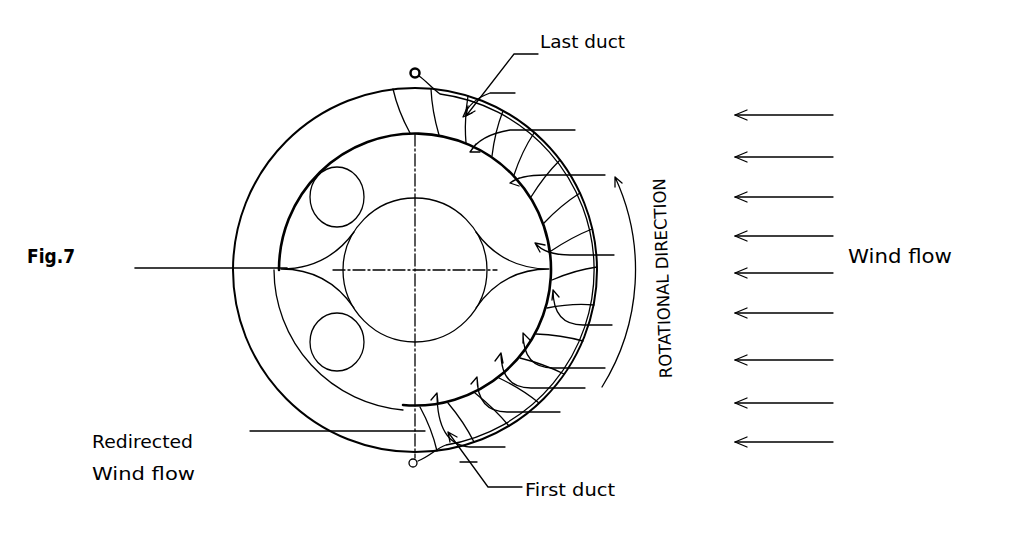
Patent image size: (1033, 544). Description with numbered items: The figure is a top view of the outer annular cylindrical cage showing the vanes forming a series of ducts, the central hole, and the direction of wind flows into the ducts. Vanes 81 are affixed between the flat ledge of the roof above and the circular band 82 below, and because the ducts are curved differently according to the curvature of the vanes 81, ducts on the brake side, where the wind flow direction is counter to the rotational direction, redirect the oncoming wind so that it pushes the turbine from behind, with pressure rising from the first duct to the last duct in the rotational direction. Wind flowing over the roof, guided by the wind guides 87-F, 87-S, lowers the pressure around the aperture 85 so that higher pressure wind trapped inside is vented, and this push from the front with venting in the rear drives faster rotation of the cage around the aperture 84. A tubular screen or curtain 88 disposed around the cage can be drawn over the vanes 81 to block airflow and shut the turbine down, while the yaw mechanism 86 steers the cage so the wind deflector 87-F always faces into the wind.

The vanes 81 is at (533, 160).
The circular band 82 is at (365, 108).
The aperture 84 is at (466, 213).
The aperture 85 is at (363, 347).
The yaw mechanism 86 is at (176, 268).
The wind guide 87-S is at (448, 142).
The wind guide 87-F is at (512, 287).
The tubular screen or curtain 88 is at (458, 88).